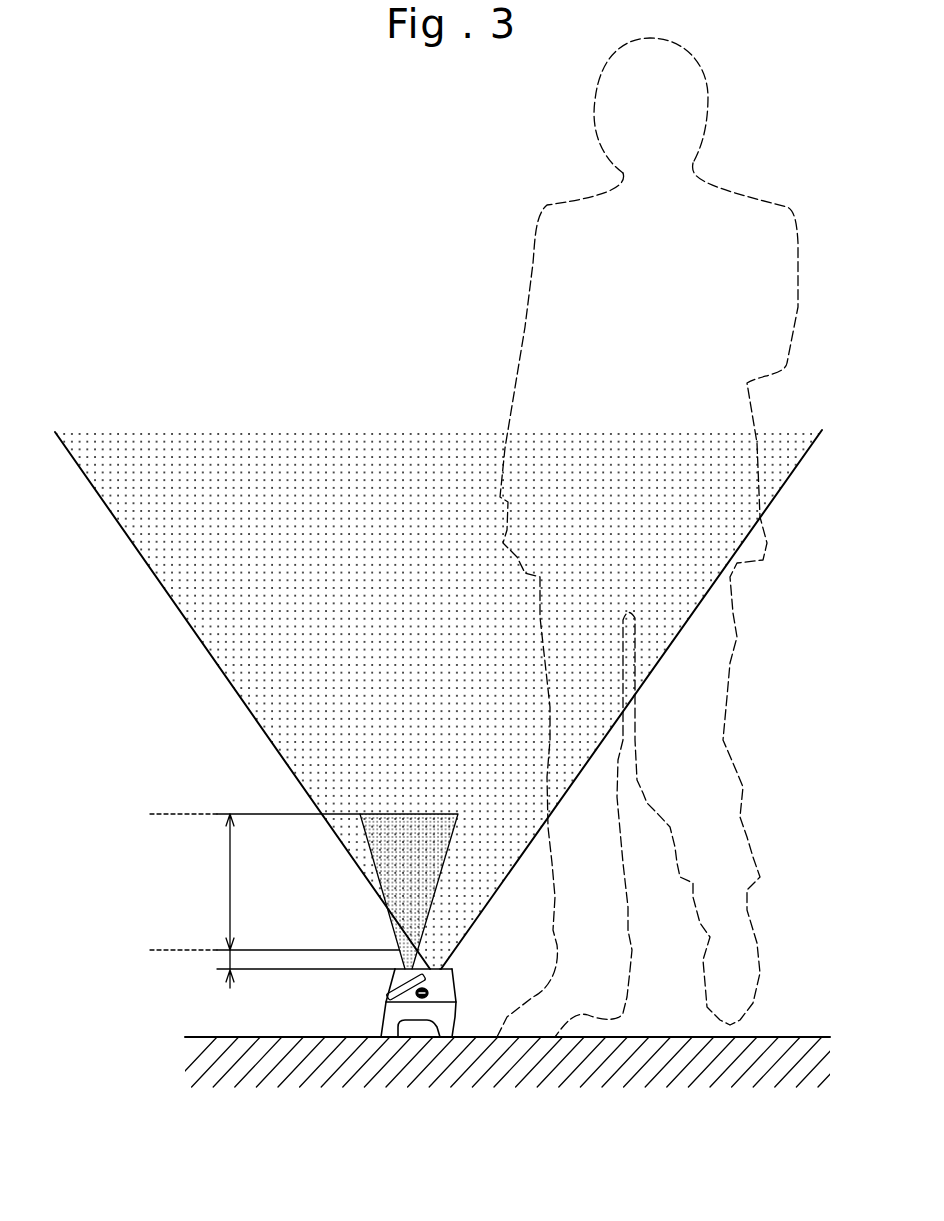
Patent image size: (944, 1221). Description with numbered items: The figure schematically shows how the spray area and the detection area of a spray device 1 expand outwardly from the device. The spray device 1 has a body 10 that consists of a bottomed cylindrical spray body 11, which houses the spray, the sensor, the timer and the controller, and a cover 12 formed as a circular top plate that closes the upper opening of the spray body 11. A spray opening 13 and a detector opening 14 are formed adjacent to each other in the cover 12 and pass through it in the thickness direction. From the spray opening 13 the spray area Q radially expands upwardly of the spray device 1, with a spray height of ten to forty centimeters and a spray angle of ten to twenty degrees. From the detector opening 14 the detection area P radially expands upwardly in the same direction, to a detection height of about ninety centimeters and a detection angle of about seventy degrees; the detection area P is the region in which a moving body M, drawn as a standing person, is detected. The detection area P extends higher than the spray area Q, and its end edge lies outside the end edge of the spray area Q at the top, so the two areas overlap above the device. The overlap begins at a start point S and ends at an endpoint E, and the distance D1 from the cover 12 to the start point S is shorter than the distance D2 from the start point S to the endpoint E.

The spray device 1 is at (444, 983).
The body 10 is at (497, 983).
The spray body 11 is at (457, 1017).
The cover 12 is at (480, 966).
The spray opening 13 is at (452, 968).
The detector opening 14 is at (438, 968).
The detection area P is at (222, 646).
The spray area Q is at (403, 853).
The moving body M is at (717, 183).
The endpoint E is at (245, 815).
The start point S is at (264, 951).
The distance D1 is at (230, 960).
The distance D2 is at (230, 877).